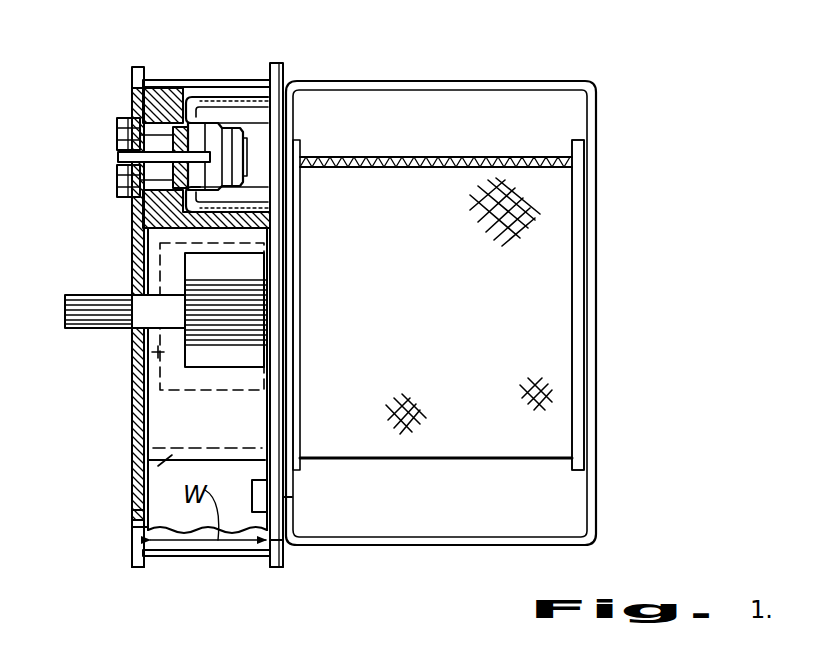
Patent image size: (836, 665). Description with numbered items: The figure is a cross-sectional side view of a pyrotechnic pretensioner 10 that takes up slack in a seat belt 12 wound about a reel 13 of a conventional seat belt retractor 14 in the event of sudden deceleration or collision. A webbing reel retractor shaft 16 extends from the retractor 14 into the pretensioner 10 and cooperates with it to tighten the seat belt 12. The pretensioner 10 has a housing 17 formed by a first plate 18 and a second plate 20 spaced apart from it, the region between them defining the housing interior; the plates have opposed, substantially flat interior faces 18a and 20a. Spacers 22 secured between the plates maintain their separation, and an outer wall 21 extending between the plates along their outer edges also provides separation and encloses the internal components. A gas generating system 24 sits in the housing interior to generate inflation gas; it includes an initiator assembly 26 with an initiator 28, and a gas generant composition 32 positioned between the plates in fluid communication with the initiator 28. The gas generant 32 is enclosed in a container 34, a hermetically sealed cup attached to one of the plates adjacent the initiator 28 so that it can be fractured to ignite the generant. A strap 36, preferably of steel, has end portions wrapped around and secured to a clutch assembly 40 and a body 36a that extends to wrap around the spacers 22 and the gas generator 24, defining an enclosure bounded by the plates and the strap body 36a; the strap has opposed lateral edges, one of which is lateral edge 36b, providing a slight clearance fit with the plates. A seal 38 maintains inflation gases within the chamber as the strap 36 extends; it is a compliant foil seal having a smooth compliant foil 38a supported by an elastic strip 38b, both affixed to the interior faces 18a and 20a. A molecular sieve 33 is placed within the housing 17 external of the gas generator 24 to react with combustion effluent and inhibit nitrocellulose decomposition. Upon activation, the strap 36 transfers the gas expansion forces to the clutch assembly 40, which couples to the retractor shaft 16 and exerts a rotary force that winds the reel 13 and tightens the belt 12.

The pyrotechnic pretensioner 10 is at (118, 54).
The seat belt 12 is at (545, 249).
The reel 13 is at (583, 345).
The seat belt retractor 14 is at (541, 71).
The webbing reel retractor shaft 16 is at (263, 306).
The housing 17 is at (280, 575).
The first plate 18 is at (287, 557).
The interior face of first plate 18a is at (273, 574).
The second plate 20 is at (134, 568).
The interior face of second plate 20a is at (143, 570).
The outer wall 21 is at (200, 78).
The spacers 22 is at (140, 472).
The gas generating system 24 is at (113, 116).
The initiator assembly 26 is at (136, 213).
The initiator 28 is at (207, 162).
The gas generant composition 32 is at (262, 122).
The molecular sieve 33 is at (283, 506).
The container 34 is at (214, 97).
The strap 36 is at (178, 428).
The strap body 36a is at (267, 407).
The lateral edge of strap 36b is at (148, 403).
The seal 38 is at (134, 529).
The compliant foil 38a is at (283, 497).
The elastic strip 38b is at (135, 510).
The clutch assembly 40 is at (148, 352).